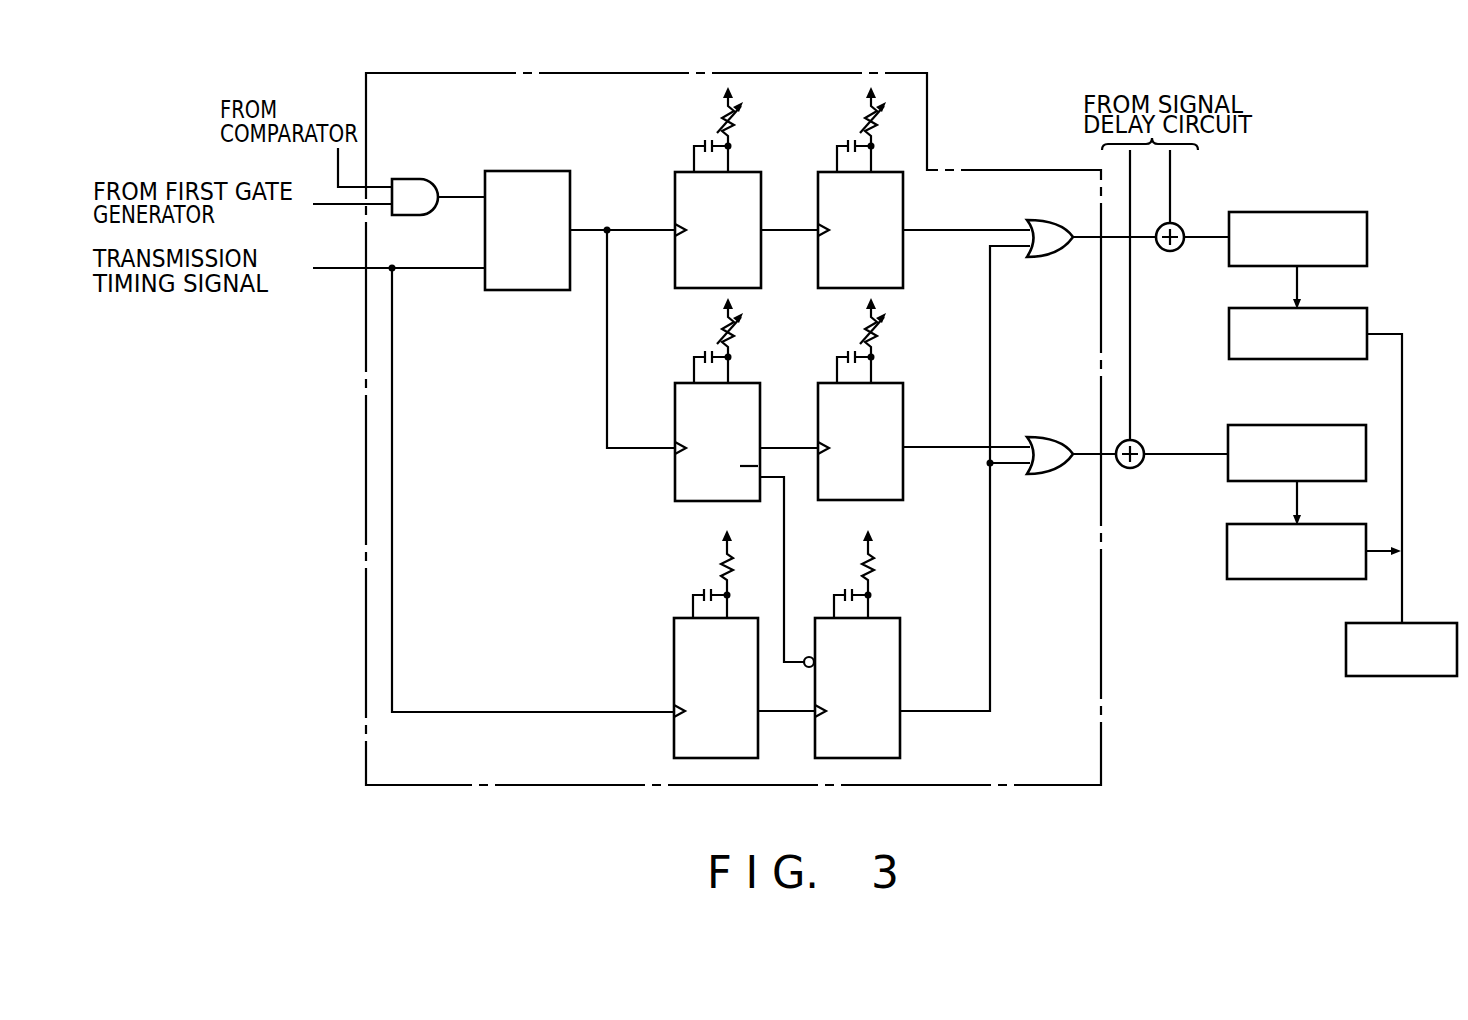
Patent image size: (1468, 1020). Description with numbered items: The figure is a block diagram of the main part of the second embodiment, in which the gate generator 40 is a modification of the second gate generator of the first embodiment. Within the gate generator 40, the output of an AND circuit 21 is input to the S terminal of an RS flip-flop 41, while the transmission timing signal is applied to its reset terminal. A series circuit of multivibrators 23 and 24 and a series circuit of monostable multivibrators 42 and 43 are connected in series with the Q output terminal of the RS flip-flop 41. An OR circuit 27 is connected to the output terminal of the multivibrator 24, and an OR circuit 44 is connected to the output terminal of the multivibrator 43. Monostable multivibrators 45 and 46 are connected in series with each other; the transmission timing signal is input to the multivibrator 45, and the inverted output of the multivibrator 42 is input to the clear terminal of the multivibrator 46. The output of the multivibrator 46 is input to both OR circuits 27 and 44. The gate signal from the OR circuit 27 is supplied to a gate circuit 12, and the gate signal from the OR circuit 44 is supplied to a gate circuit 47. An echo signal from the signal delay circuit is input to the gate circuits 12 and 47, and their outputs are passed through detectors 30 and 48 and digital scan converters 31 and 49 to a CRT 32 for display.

The gate circuit 12 is at (1181, 226).
The AND circuit 21 is at (412, 179).
The multivibrator 23 is at (749, 172).
The multivibrator 24 is at (903, 186).
The OR circuit 27 is at (1044, 220).
The detector 30 is at (1323, 212).
The digital scan converter 31 is at (1229, 336).
The CRT 32 is at (1346, 649).
The gate generator 40 is at (366, 437).
The RS flip-flop 41 is at (527, 171).
The monostable multivibrator 42 is at (760, 415).
The monostable multivibrator 43 is at (903, 415).
The OR circuit 44 is at (1043, 437).
The monostable multivibrator 45 is at (674, 638).
The monostable multivibrator 46 is at (900, 648).
The gate circuit 47 is at (1140, 443).
The detector 48 is at (1308, 407).
The digital scan converter 49 is at (1227, 553).